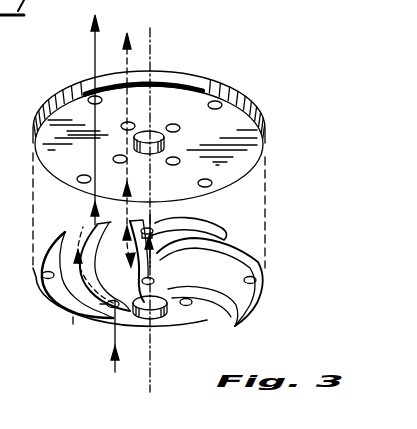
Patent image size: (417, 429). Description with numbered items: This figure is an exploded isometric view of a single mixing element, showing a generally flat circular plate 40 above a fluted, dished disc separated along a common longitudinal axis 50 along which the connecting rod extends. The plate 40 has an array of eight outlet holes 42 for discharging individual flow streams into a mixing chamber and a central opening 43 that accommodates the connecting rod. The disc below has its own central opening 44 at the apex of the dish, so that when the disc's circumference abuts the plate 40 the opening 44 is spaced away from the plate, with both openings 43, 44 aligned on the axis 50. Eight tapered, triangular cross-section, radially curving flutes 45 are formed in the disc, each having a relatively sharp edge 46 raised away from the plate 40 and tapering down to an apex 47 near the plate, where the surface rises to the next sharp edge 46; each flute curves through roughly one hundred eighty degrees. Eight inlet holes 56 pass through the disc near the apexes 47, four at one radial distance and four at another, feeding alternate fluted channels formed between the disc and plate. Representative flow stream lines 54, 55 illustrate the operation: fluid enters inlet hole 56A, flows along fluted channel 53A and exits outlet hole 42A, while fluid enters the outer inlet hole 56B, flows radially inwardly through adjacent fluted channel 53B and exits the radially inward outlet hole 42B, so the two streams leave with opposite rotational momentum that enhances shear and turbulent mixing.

The plate 40 is at (262, 109).
The outlet holes 42 is at (218, 103).
The outlet hole 42A is at (90, 97).
The outlet hole 42B is at (134, 125).
The central opening 43 is at (166, 140).
The central opening 44 is at (142, 316).
The flutes 45 is at (232, 250).
The sharp edge 46 is at (228, 230).
The apex 47 is at (233, 298).
The longitudinal axis 50 is at (152, 52).
The fluted channel 53A is at (73, 241).
The fluted channel 53B is at (212, 216).
The flow stream line 54 is at (93, 40).
The flow stream line 55 is at (128, 56).
The inlet holes 56 is at (256, 283).
The inlet hole 56A is at (112, 307).
The inlet hole 56B is at (150, 227).